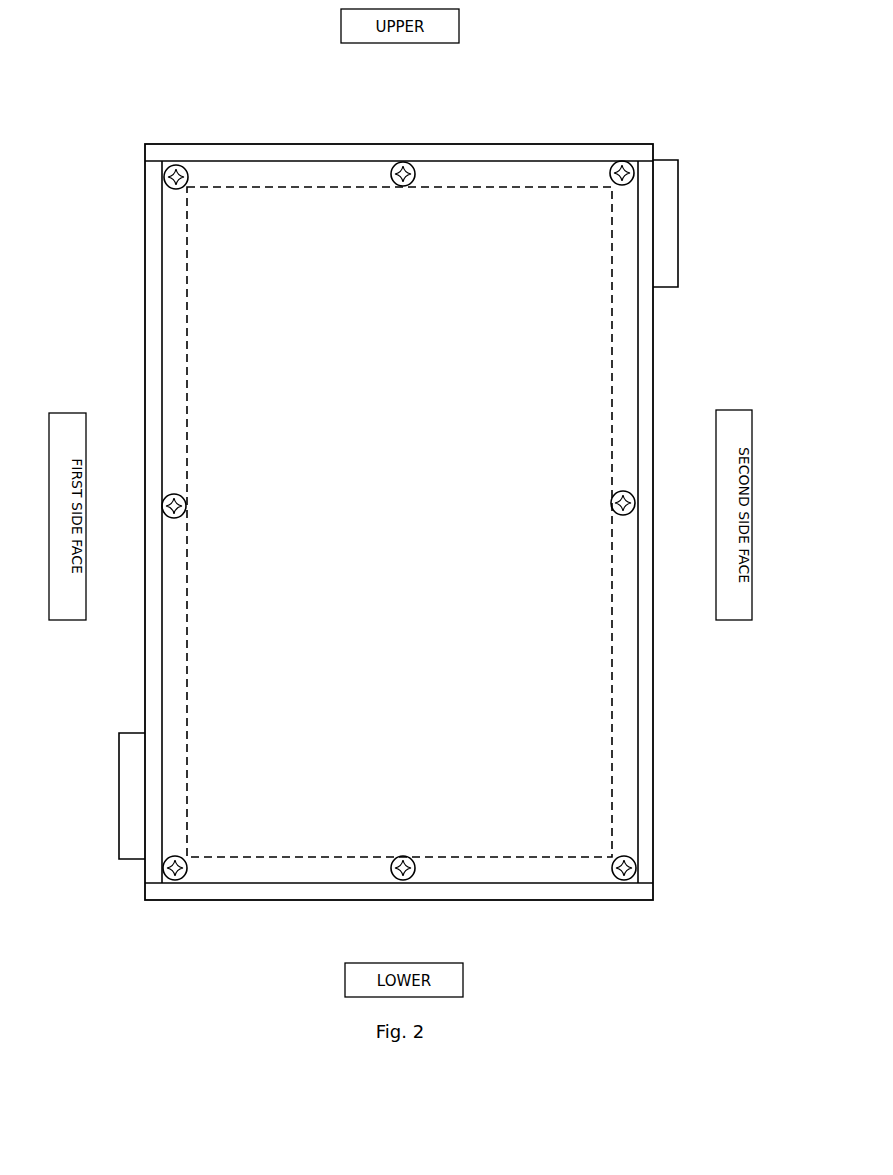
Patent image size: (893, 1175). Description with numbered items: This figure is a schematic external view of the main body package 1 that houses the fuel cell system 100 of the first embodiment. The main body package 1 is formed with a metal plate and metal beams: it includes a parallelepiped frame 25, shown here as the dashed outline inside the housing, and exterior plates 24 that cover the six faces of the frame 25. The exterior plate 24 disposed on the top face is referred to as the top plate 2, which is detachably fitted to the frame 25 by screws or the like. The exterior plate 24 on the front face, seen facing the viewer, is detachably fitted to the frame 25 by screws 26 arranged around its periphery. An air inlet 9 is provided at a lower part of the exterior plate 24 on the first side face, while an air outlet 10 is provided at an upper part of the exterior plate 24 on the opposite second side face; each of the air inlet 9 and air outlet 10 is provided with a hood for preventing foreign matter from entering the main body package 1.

The fuel cell system 100 is at (387, 71).
The main body package 1 is at (289, 141).
The top plate 2 is at (480, 153).
The air inlet 9 is at (133, 860).
The air outlet 10 is at (663, 160).
The exterior plate 24 is at (148, 273).
The frame 25 is at (168, 394).
The screw 26 is at (172, 882).